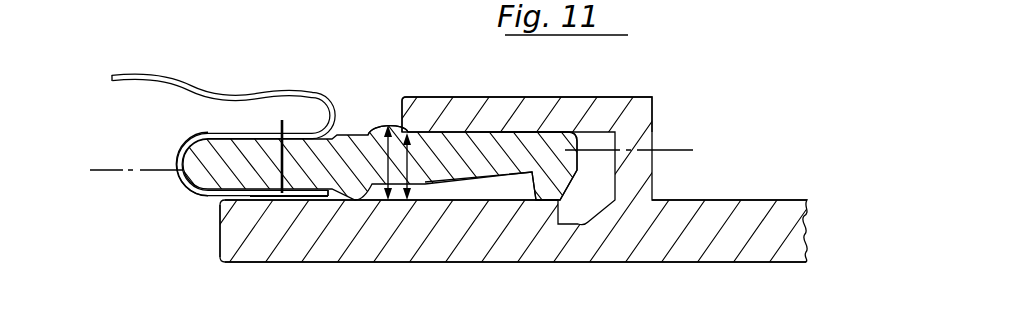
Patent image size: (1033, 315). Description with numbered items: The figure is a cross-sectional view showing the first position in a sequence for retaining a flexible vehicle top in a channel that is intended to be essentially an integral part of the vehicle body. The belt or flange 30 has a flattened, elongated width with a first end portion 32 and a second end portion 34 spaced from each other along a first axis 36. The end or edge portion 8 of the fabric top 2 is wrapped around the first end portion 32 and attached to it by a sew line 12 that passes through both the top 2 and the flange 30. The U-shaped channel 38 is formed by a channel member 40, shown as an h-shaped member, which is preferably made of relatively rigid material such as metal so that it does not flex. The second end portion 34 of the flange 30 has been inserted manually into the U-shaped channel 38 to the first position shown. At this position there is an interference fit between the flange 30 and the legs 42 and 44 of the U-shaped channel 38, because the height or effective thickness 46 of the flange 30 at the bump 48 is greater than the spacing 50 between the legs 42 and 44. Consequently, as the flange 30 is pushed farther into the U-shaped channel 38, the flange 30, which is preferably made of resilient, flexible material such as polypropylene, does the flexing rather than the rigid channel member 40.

The top 2 is at (222, 89).
The end or edge portion of the top 8 is at (180, 157).
The sew line 12 is at (282, 121).
The flange 30 is at (355, 132).
The first end portion 32 is at (190, 193).
The second end portion 34 is at (497, 160).
The first axis 36 is at (110, 176).
The U-shaped channel 38 is at (490, 188).
The channel member 40 is at (650, 95).
The leg of the U-shaped channel 42 is at (480, 110).
The leg of the U-shaped channel 44 is at (524, 230).
The height or effective thickness 46 is at (388, 161).
The bump 48 is at (386, 124).
The spacing 50 is at (407, 161).